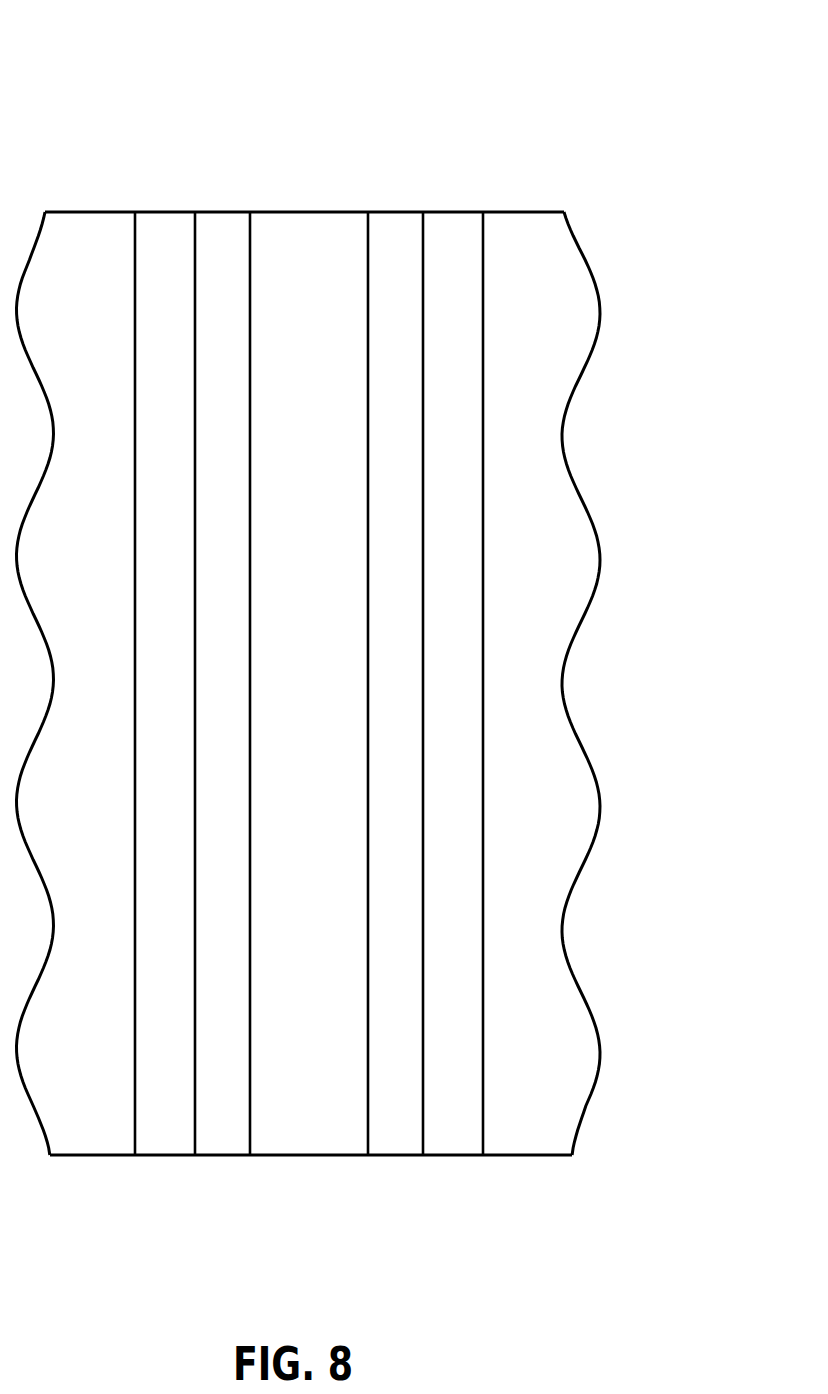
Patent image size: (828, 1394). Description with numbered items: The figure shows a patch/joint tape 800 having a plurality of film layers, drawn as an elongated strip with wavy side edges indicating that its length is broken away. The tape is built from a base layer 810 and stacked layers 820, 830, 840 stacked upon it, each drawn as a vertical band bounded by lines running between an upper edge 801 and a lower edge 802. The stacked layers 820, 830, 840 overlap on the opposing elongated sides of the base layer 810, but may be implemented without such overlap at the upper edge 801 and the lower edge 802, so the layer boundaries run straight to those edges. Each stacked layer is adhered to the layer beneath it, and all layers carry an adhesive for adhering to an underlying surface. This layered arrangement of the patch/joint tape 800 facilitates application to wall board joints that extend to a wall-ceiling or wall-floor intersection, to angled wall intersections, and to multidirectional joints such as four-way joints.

The patch/joint tape 800 is at (662, 28).
The upper edge 801 is at (279, 176).
The lower edge 802 is at (326, 1180).
The base layer 810 is at (312, 211).
The stacked layer 820 is at (382, 211).
The stacked layer 830 is at (453, 211).
The stacked layer 840 is at (527, 211).